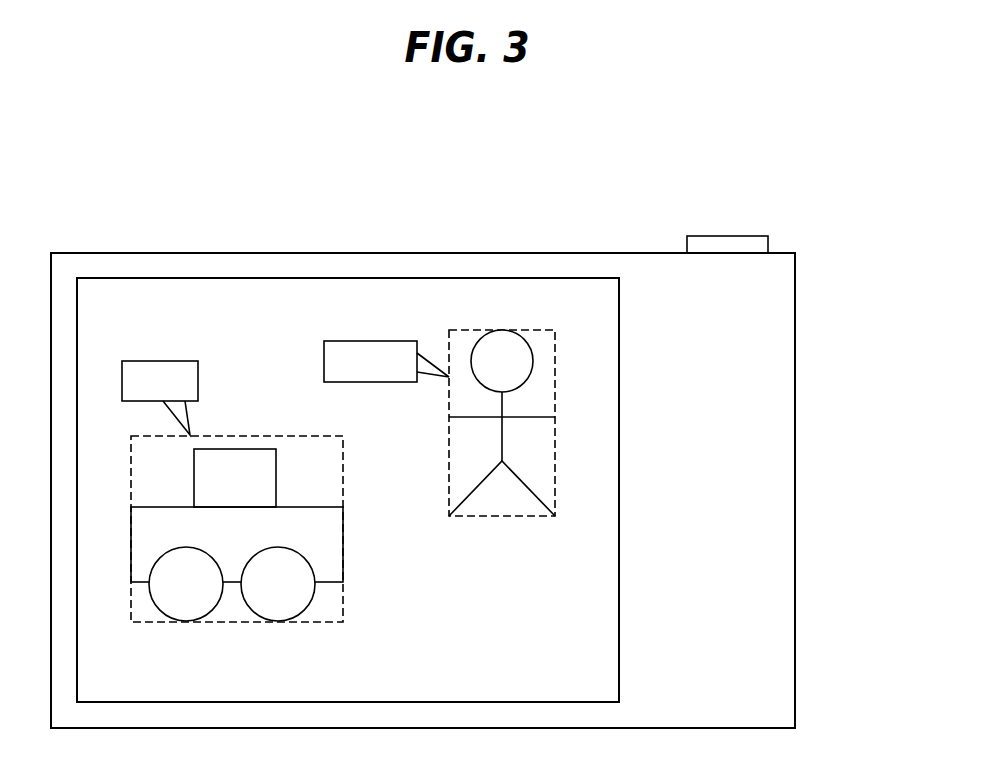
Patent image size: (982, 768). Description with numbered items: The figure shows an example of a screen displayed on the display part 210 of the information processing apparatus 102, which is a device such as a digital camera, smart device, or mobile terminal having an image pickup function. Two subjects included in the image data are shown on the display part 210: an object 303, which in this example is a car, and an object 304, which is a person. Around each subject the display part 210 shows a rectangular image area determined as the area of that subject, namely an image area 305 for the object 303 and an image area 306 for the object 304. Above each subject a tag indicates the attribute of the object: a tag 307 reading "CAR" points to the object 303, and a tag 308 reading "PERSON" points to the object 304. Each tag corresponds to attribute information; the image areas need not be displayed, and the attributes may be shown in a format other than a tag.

The information processing apparatus 102 is at (795, 352).
The display part 210 is at (619, 316).
The object 303 is at (236, 449).
The object 304 is at (533, 359).
The image area 305 is at (226, 622).
The image area 306 is at (511, 516).
The tag 307 is at (159, 361).
The tag 308 is at (379, 341).